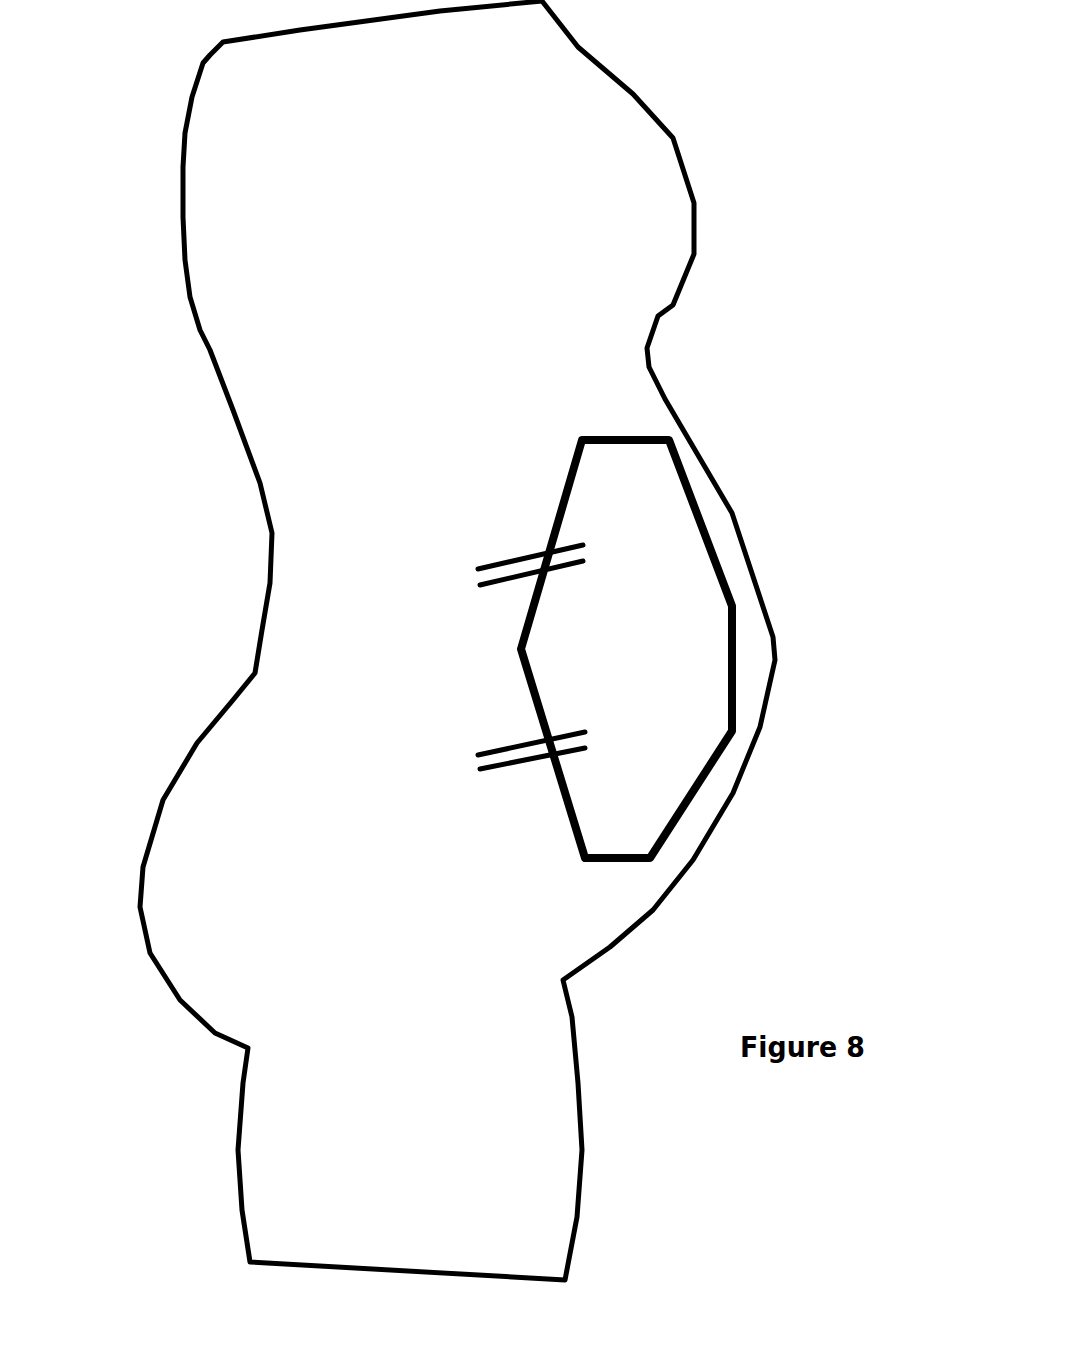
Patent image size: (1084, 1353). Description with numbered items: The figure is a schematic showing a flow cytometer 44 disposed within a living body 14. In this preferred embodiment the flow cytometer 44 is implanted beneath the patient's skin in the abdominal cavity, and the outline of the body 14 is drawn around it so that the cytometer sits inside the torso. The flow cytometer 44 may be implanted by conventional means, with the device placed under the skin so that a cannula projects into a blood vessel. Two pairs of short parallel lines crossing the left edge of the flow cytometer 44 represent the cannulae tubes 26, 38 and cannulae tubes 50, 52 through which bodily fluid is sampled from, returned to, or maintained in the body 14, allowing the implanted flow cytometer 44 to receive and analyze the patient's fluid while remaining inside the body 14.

The body 14 is at (190, 317).
The cannula tube 26 is at (497, 522).
The cannula tube 38 is at (500, 550).
The flow cytometer 44 is at (567, 827).
The cannula tube 50 is at (501, 704).
The cannula tube 52 is at (510, 740).